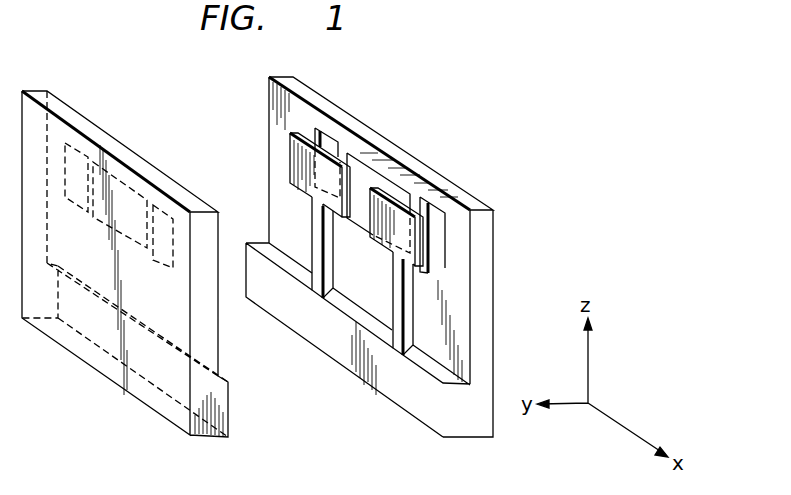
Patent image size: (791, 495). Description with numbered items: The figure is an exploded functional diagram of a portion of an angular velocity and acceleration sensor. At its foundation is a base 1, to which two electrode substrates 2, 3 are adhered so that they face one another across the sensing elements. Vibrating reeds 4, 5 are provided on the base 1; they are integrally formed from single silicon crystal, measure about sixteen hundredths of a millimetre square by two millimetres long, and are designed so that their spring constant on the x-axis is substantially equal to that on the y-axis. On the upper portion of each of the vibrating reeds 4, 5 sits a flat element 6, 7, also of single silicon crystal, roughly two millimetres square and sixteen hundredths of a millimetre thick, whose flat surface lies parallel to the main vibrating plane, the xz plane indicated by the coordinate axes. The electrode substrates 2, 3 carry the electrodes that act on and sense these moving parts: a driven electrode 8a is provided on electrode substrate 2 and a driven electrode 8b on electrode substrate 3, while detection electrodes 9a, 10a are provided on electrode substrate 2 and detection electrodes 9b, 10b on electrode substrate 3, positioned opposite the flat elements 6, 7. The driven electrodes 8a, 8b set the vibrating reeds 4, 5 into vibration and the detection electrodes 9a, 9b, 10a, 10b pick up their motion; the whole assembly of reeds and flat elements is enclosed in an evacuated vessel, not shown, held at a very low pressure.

The base 1 is at (357, 368).
The electrode substrate 2 is at (485, 235).
The electrode substrate 3 is at (158, 402).
The vibrating reed 4 is at (318, 295).
The vibrating reed 5 is at (395, 345).
The flat element 6 is at (295, 173).
The flat element 7 is at (410, 250).
The driven electrode 8a is at (368, 173).
The driven electrode 8b is at (113, 183).
The detection electrode 9a is at (325, 142).
The detection electrode 9b is at (76, 158).
The detection electrode 10a is at (433, 218).
The detection electrode 10b is at (165, 223).